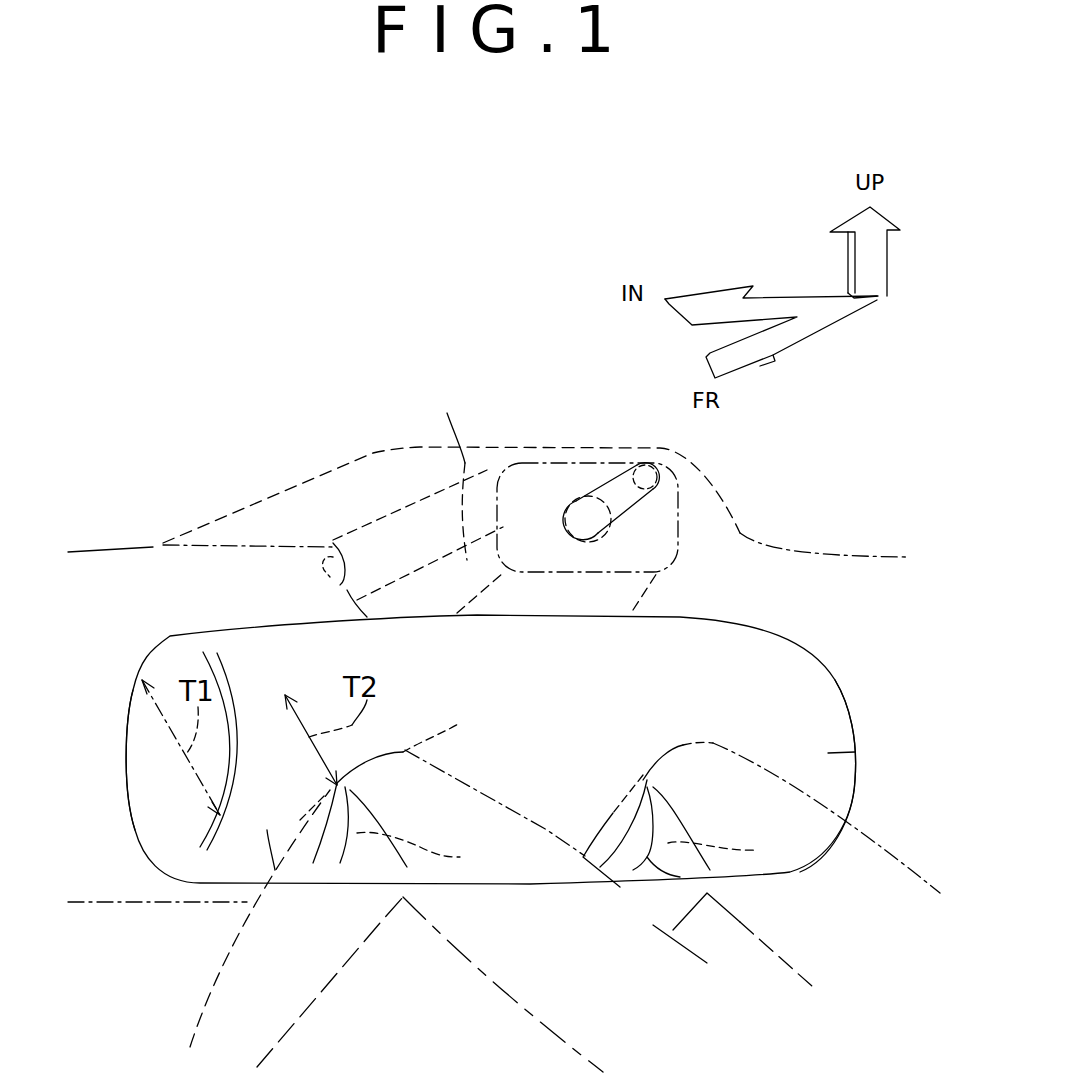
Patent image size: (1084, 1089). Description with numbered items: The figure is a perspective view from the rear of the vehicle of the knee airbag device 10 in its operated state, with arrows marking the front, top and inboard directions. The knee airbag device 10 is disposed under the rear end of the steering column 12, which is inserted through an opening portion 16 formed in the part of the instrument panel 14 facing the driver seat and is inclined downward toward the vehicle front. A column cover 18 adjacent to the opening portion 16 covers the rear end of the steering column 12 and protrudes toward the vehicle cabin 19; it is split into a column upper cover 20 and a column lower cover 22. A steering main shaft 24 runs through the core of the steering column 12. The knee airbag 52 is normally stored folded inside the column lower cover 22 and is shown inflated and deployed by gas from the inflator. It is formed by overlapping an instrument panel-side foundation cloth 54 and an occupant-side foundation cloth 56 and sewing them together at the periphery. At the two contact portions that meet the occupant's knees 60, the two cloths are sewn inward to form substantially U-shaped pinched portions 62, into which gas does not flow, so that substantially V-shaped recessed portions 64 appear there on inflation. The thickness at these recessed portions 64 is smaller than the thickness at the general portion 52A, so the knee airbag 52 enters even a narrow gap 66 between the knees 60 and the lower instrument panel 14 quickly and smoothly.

The knee airbag device 10 is at (780, 597).
The steering column 12 is at (403, 497).
The instrument panel 14 is at (140, 547).
The opening portion 16 is at (333, 545).
The column cover 18 is at (538, 378).
The vehicle cabin 19 is at (464, 1037).
The column upper cover 20 is at (497, 463).
The column lower cover 22 is at (445, 468).
The steering main shaft 24 is at (610, 457).
The knee airbag 52 is at (870, 650).
The general portion 52A is at (840, 753).
The instrument panel-side foundation cloth 54 is at (127, 722).
The occupant-side foundation cloth 56 is at (275, 870).
The knees 60 is at (460, 724).
The pinched portions 62 is at (577, 852).
The recessed portions 64 is at (333, 858).
The gap 66 is at (318, 828).